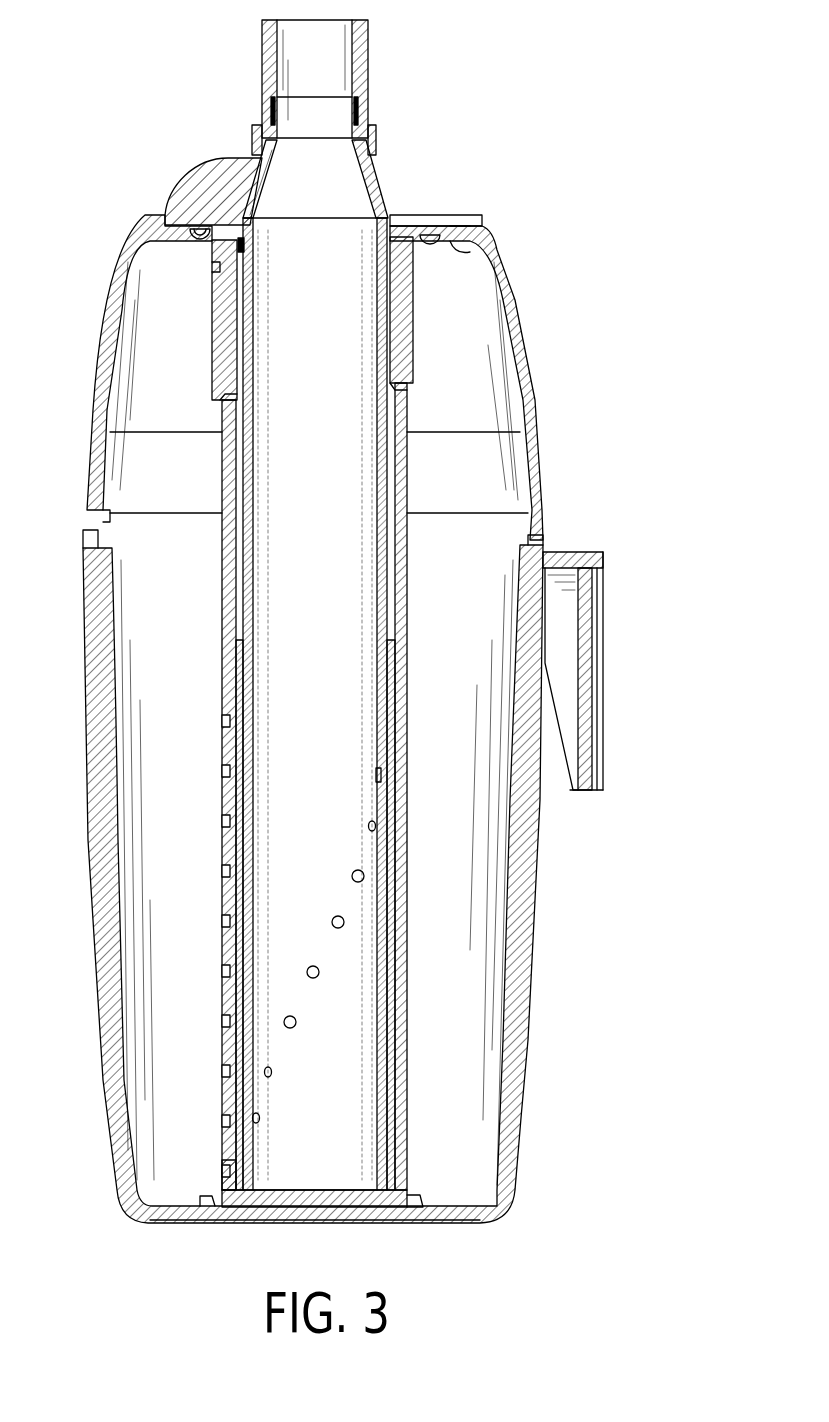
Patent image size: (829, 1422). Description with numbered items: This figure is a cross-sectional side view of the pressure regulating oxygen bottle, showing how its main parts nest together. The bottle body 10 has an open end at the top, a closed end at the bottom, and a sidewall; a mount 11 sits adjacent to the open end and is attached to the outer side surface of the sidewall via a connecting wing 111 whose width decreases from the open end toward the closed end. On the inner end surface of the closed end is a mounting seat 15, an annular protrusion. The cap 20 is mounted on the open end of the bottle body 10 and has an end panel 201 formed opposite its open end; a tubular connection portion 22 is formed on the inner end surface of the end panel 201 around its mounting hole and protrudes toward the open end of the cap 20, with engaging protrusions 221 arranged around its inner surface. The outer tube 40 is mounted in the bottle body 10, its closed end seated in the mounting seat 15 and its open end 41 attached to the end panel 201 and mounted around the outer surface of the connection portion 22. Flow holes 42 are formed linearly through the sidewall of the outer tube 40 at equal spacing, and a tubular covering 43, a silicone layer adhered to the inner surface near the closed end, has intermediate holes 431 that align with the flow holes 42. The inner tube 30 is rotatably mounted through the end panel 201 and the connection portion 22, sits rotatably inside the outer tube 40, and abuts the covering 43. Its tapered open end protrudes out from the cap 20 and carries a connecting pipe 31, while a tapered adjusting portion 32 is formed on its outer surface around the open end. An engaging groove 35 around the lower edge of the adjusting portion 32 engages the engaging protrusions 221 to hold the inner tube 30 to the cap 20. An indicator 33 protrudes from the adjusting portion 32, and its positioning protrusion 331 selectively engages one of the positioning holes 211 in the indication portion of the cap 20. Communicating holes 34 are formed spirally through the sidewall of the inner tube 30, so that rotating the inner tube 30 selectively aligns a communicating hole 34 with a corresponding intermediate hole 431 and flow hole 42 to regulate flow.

The bottle body 10 is at (97, 900).
The mount 11 is at (590, 658).
The connecting wing 111 is at (560, 612).
The mounting seat 15 is at (208, 1203).
The cap 20 is at (524, 408).
The end panel 201 is at (470, 250).
The positioning holes 211 is at (432, 233).
The connection portion 22 is at (226, 346).
The engaging protrusions 221 is at (221, 268).
The inner tube 30 is at (384, 878).
The connecting pipe 31 is at (362, 57).
The adjusting portion 32 is at (376, 190).
The indicator 33 is at (205, 188).
The positioning protrusion 331 is at (198, 233).
The communicating holes 34 is at (246, 1015).
The engaging groove 35 is at (247, 243).
The outer tube 40 is at (401, 1023).
The open end 41 is at (413, 322).
The flow holes 42 is at (228, 1168).
The covering 43 is at (391, 1140).
The intermediate holes 431 is at (240, 1070).